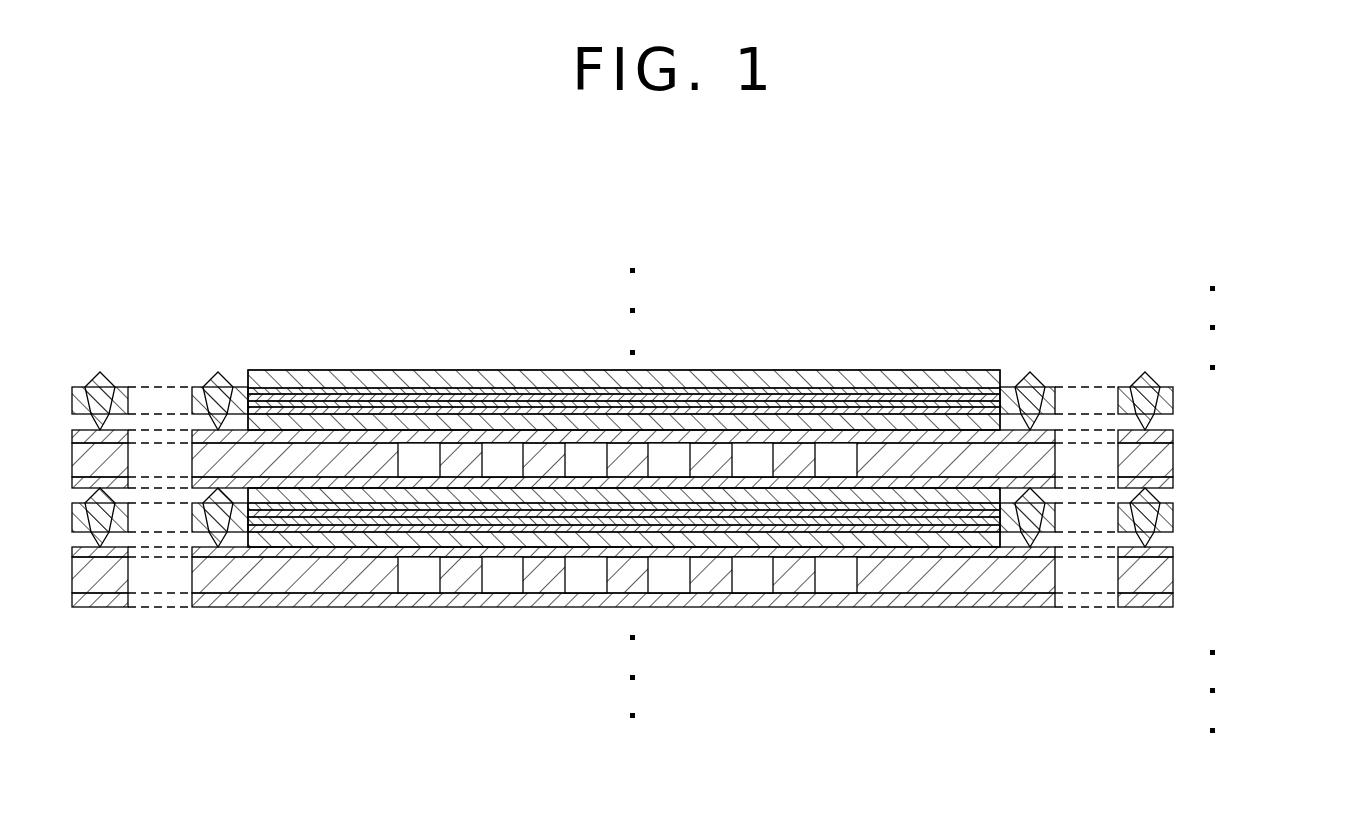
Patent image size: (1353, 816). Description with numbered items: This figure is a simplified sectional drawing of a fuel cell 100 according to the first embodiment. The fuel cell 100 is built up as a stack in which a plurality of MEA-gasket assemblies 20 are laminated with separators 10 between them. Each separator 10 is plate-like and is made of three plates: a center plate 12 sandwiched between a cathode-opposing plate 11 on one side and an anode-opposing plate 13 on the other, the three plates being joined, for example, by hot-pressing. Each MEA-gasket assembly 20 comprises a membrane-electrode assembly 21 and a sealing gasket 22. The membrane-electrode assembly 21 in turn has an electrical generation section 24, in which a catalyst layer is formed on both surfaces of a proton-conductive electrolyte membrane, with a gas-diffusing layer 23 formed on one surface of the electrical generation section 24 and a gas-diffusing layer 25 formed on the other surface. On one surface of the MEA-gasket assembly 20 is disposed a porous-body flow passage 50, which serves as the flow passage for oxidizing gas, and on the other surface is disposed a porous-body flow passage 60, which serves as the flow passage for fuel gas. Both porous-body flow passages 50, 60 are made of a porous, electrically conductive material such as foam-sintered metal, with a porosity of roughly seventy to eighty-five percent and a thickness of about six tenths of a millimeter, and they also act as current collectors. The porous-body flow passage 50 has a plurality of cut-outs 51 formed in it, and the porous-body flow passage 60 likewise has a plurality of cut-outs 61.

The fuel cell 100 is at (1282, 740).
The separator 10 is at (675, 526).
The cathode-opposing plate 11 is at (1173, 431).
The center plate 12 is at (1160, 459).
The anode-opposing plate 13 is at (652, 556).
The MEA-gasket assembly 20 is at (651, 430).
The membrane-electrode assembly 21 is at (624, 392).
The sealing gasket 22 is at (1040, 384).
The gas-diffusing layer 23 is at (850, 397).
The electrical generation section 24 is at (896, 404).
The gas-diffusing layer 25 is at (827, 298).
The porous-body flow passage 50 is at (623, 400).
The cut-outs 51 is at (314, 392).
The porous-body flow passage 60 is at (624, 420).
The cut-outs 61 is at (462, 370).